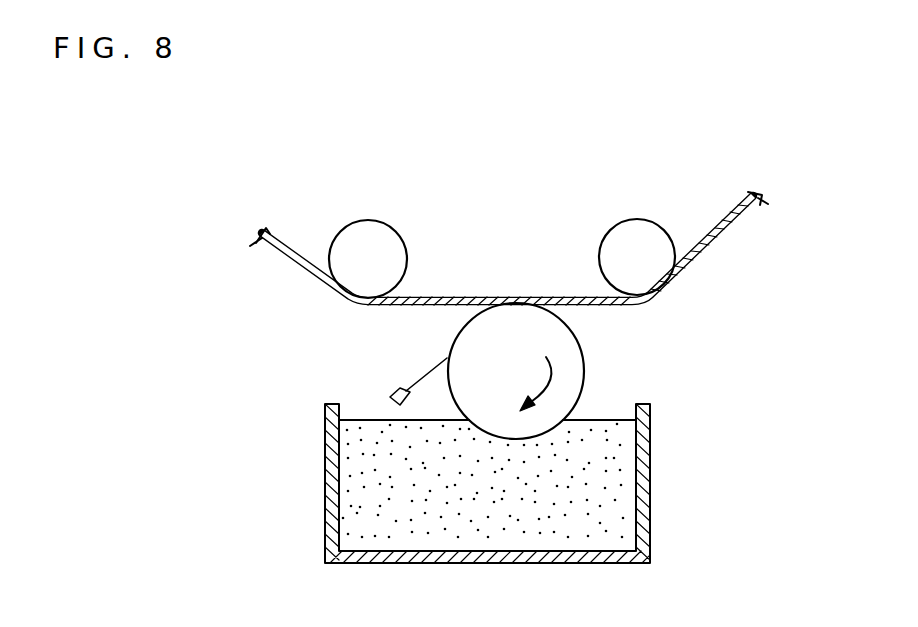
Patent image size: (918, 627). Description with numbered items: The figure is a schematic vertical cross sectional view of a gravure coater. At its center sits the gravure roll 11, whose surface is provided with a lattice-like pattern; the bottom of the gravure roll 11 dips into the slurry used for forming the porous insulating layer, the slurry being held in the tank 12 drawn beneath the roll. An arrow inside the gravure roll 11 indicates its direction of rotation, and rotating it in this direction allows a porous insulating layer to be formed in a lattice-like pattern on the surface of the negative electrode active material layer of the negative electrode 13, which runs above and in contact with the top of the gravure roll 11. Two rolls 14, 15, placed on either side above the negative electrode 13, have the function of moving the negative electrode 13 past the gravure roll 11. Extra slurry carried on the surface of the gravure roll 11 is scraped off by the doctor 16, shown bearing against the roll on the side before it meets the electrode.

The gravure roll 11 is at (573, 367).
The coating liquid tank 12 is at (607, 507).
The negative electrode 13 is at (718, 248).
The roll 14 is at (381, 237).
The roll 15 is at (639, 232).
The doctor 16 is at (395, 390).